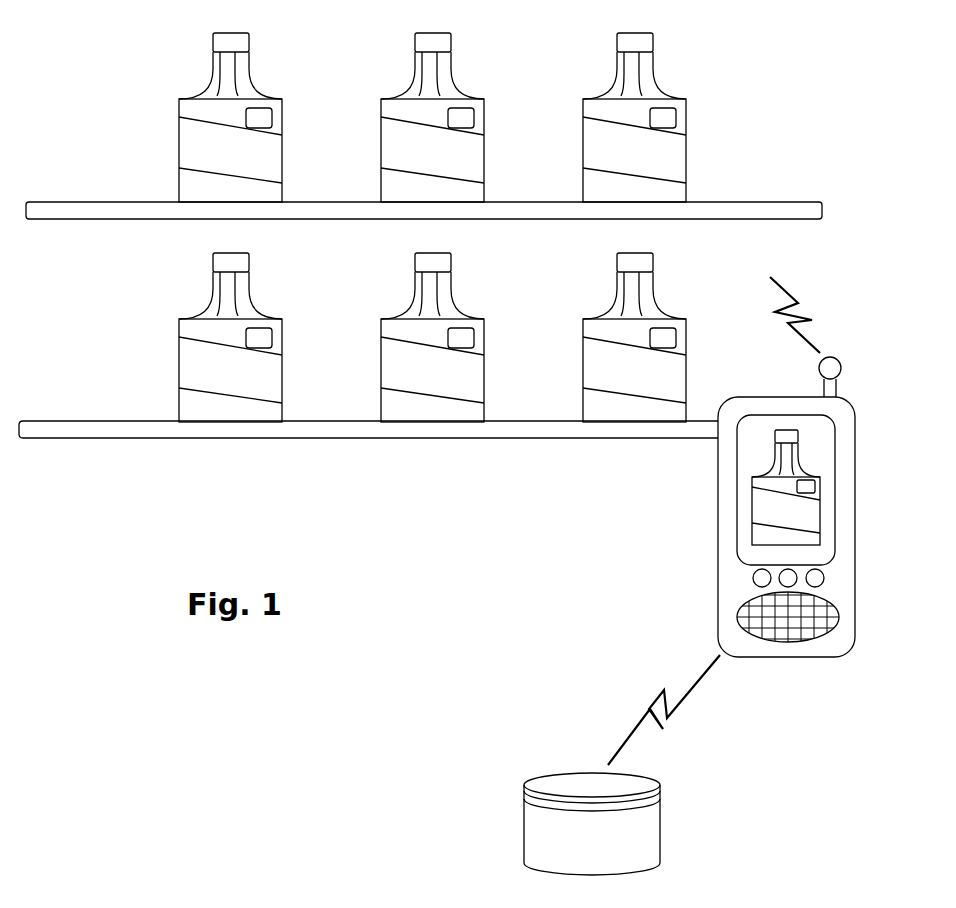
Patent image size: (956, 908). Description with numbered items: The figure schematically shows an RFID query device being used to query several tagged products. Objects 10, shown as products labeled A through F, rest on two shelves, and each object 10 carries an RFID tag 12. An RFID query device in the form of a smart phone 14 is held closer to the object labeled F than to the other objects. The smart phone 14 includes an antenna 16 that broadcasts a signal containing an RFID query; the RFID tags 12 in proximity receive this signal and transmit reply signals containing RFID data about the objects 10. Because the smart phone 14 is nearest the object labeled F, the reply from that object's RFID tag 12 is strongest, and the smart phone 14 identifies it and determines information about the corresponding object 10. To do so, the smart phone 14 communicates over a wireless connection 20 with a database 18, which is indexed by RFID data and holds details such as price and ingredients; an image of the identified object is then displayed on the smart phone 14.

The object 10 is at (766, 133).
The RFID tag 12 is at (457, 227).
The smart phone 14 is at (718, 542).
The antenna 16 is at (840, 387).
The database 18 is at (580, 855).
The wireless connection 20 is at (650, 707).